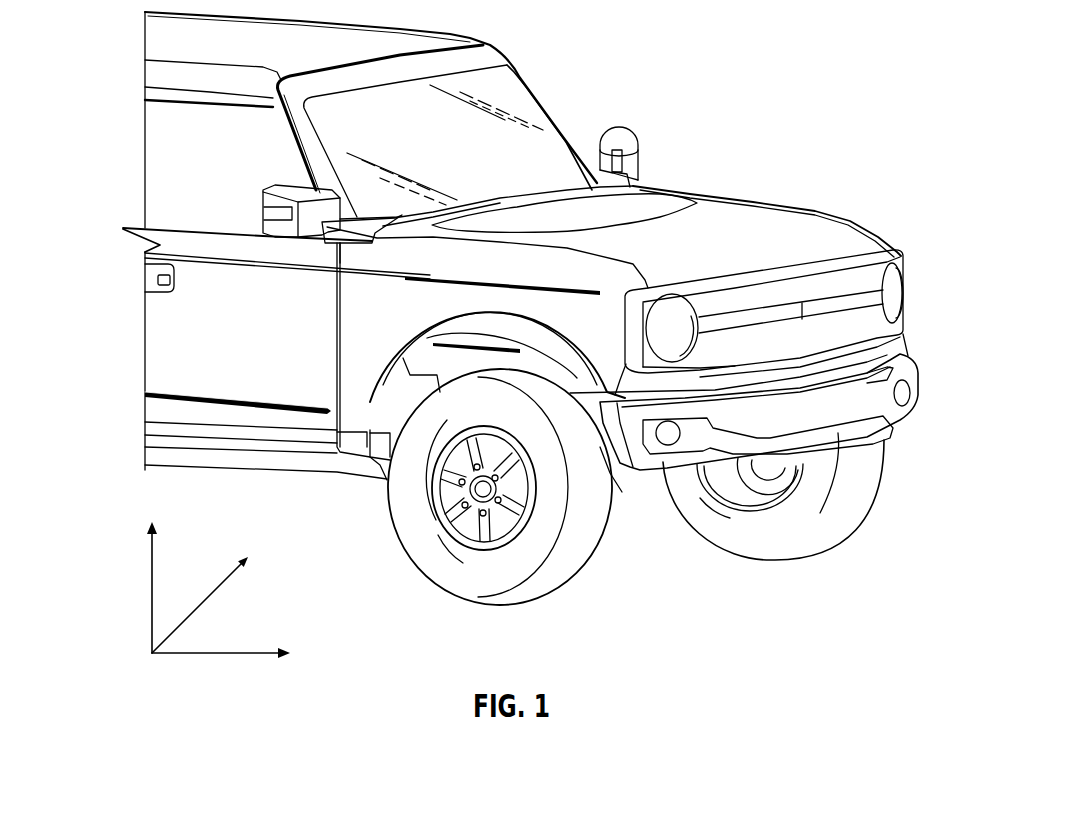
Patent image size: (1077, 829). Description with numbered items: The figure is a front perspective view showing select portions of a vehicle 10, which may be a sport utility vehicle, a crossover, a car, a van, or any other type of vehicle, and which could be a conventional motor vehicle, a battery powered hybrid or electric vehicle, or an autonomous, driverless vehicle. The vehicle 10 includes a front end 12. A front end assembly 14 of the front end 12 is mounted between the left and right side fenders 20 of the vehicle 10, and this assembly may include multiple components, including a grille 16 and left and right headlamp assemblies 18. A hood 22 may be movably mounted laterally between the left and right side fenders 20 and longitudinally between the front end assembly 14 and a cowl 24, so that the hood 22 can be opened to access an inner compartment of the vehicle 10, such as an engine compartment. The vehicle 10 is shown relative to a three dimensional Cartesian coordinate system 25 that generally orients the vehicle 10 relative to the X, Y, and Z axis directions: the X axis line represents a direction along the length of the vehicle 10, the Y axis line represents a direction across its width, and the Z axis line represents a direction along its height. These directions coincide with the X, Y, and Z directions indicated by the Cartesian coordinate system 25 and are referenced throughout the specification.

The vehicle 10 is at (817, 46).
The front end 12 is at (905, 240).
The front end assembly 14 is at (858, 322).
The grille 16 is at (730, 347).
The headlamp assemblies 18 is at (677, 307).
The side fenders 20 is at (803, 207).
The hood 22 is at (710, 217).
The cowl 24 is at (568, 193).
The Cartesian coordinate system 25 is at (135, 636).